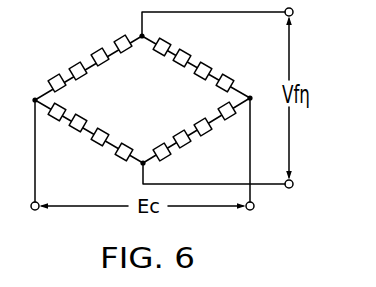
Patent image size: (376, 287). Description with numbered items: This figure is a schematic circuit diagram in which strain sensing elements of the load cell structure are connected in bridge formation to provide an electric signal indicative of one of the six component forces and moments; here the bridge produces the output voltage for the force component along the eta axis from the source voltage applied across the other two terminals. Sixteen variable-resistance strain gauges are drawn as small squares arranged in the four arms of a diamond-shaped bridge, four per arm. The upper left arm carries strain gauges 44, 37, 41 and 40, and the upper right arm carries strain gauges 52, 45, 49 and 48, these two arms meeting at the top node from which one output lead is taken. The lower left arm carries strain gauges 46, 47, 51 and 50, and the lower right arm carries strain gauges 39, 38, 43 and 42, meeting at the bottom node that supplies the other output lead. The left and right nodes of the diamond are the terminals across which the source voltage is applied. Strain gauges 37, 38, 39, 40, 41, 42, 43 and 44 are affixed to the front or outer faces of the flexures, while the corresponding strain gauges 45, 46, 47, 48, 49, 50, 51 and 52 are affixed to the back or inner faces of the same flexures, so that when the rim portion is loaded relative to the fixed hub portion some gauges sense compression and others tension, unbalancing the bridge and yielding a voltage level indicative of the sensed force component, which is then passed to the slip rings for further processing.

The strain gauge 37 is at (75, 65).
The strain gauge 38 is at (188, 147).
The strain gauge 39 is at (165, 160).
The strain gauge 40 is at (120, 38).
The strain gauge 41 is at (94, 51).
The strain gauge 42 is at (232, 120).
The strain gauge 43 is at (208, 132).
The strain gauge 44 is at (50, 78).
The strain gauge 45 is at (188, 52).
The strain gauge 46 is at (55, 118).
The strain gauge 47 is at (75, 130).
The strain gauge 48 is at (232, 78).
The strain gauge 49 is at (208, 64).
The strain gauge 50 is at (123, 159).
The strain gauge 51 is at (100, 145).
The strain gauge 52 is at (165, 40).